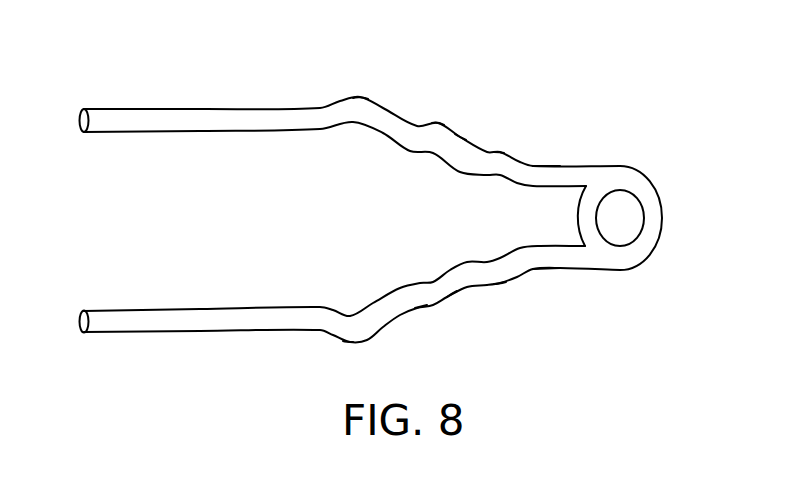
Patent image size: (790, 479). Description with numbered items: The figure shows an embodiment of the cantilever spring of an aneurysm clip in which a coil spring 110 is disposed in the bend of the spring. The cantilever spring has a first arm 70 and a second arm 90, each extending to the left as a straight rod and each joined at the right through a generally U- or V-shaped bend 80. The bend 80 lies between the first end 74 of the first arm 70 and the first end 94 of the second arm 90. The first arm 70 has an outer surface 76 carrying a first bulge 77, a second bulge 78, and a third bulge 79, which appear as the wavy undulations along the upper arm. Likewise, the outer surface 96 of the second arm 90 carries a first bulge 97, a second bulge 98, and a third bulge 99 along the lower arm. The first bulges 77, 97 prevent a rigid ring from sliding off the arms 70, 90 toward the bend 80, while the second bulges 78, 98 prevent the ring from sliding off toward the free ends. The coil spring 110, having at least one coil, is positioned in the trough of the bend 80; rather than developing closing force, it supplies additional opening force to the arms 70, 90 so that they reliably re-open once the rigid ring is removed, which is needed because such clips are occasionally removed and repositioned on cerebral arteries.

The first arm 70 is at (185, 118).
The second arm 90 is at (158, 322).
The bend 80 is at (660, 217).
The coil spring 110 is at (583, 217).
The second bulge 78 is at (368, 110).
The third bulge 79 is at (438, 140).
The outer surface 76 is at (460, 137).
The first bulge 77 is at (499, 158).
The first end 74 is at (528, 177).
The first end 94 is at (520, 263).
The first bulge 97 is at (500, 273).
The outer surface 96 is at (453, 295).
The third bulge 99 is at (420, 300).
The second bulge 98 is at (350, 328).